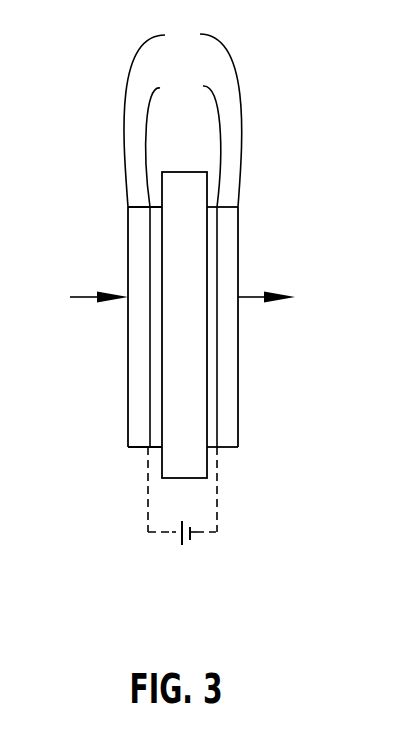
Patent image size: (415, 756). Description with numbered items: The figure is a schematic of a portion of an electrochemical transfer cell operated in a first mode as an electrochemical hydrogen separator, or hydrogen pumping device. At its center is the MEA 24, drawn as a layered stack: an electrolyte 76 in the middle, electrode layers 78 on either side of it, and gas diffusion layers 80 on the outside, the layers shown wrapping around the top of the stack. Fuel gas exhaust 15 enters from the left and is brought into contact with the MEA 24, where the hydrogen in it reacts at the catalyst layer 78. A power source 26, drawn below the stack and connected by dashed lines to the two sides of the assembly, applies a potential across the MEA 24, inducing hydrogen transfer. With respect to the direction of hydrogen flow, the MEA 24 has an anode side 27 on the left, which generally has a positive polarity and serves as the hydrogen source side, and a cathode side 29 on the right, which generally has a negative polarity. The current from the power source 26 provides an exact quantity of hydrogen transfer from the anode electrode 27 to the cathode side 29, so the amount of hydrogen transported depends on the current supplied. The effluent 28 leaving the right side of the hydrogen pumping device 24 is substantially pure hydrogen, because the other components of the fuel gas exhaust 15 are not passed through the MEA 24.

The fuel gas exhaust 15 is at (43, 282).
The MEA 24 is at (86, 413).
The power source 26 is at (154, 522).
The anode side 27 is at (114, 238).
The effluent 28 is at (355, 283).
The cathode side 29 is at (275, 239).
The electrolyte 76 is at (179, 172).
The electrode layers 78 is at (183, 259).
The gas diffusion layers 80 is at (183, 114).